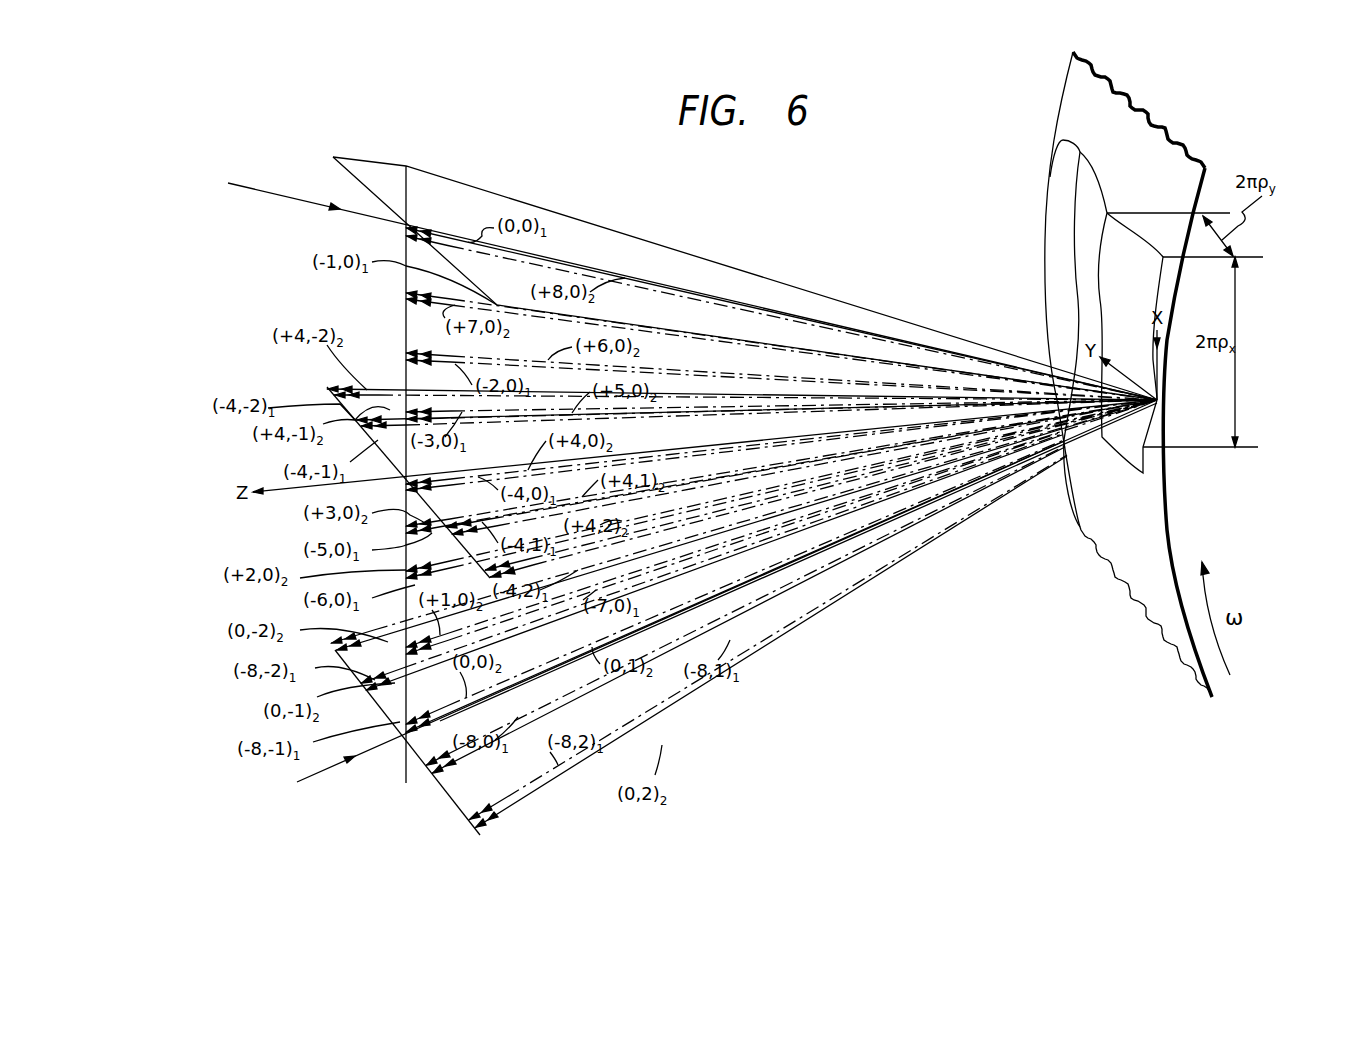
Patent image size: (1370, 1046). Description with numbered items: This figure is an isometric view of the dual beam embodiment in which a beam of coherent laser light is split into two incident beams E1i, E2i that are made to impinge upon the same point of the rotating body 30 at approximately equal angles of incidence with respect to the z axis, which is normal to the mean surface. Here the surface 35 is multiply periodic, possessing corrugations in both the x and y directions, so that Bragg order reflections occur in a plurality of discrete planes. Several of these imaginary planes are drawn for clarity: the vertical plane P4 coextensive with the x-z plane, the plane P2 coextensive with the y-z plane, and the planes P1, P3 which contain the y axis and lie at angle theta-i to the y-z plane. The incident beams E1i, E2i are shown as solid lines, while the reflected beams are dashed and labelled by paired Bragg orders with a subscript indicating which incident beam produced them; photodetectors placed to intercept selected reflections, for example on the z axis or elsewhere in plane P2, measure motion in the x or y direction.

The rotating body 30 is at (1120, 135).
The surface 35 is at (1070, 258).
The plane P1 is at (514, 283).
The plane P2 is at (469, 508).
The plane P3 is at (504, 793).
The vertical plane P4 is at (440, 210).
The incident beam E1i is at (345, 762).
The incident beam E2i is at (276, 195).